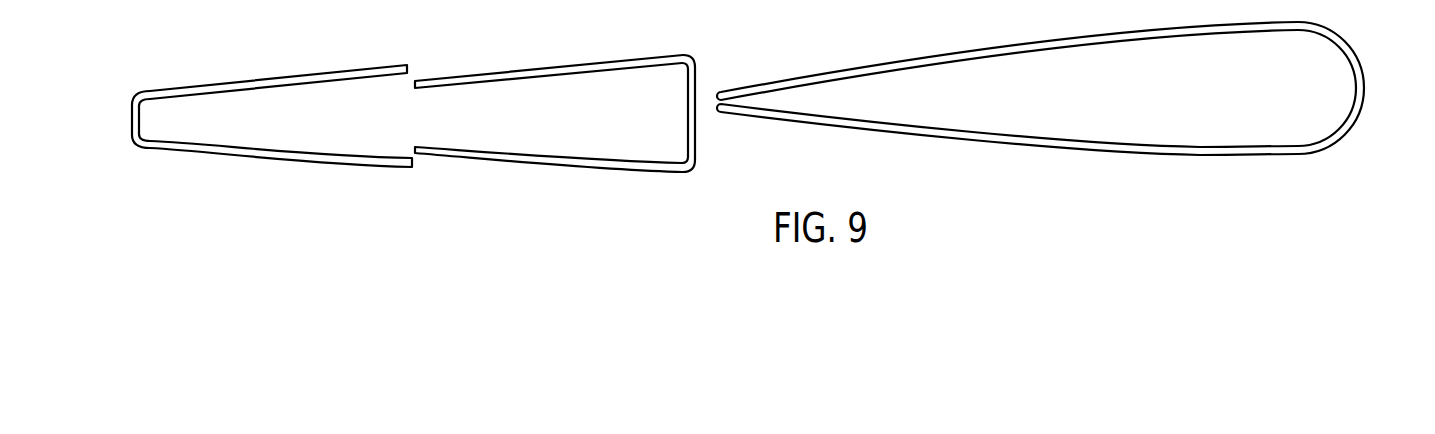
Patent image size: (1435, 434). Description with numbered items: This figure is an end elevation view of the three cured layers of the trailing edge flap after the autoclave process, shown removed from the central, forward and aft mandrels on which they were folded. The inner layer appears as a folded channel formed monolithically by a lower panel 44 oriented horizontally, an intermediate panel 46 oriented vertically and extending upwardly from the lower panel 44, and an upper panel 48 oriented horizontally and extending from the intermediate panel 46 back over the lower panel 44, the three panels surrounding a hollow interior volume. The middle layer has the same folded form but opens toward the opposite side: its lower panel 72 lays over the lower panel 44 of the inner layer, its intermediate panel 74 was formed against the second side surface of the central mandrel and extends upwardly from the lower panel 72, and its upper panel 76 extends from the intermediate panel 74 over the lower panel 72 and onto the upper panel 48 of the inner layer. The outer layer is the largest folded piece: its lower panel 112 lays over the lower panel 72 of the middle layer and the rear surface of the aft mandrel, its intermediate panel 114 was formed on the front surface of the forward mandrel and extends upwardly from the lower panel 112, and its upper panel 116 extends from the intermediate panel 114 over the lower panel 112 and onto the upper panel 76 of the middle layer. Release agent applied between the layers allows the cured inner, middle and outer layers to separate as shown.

The lower panel of the inner layer 44 is at (215, 162).
The intermediate panel of the inner layer 46 is at (132, 108).
The upper panel of the inner layer 48 is at (197, 85).
The lower panel of the middle layer 72 is at (585, 172).
The intermediate panel of the middle layer 74 is at (696, 147).
The upper panel of the middle layer 76 is at (563, 62).
The lower panel of the outer layer 112 is at (1220, 157).
The intermediate panel of the outer layer 114 is at (1353, 117).
The upper panel of the outer layer 116 is at (1110, 33).